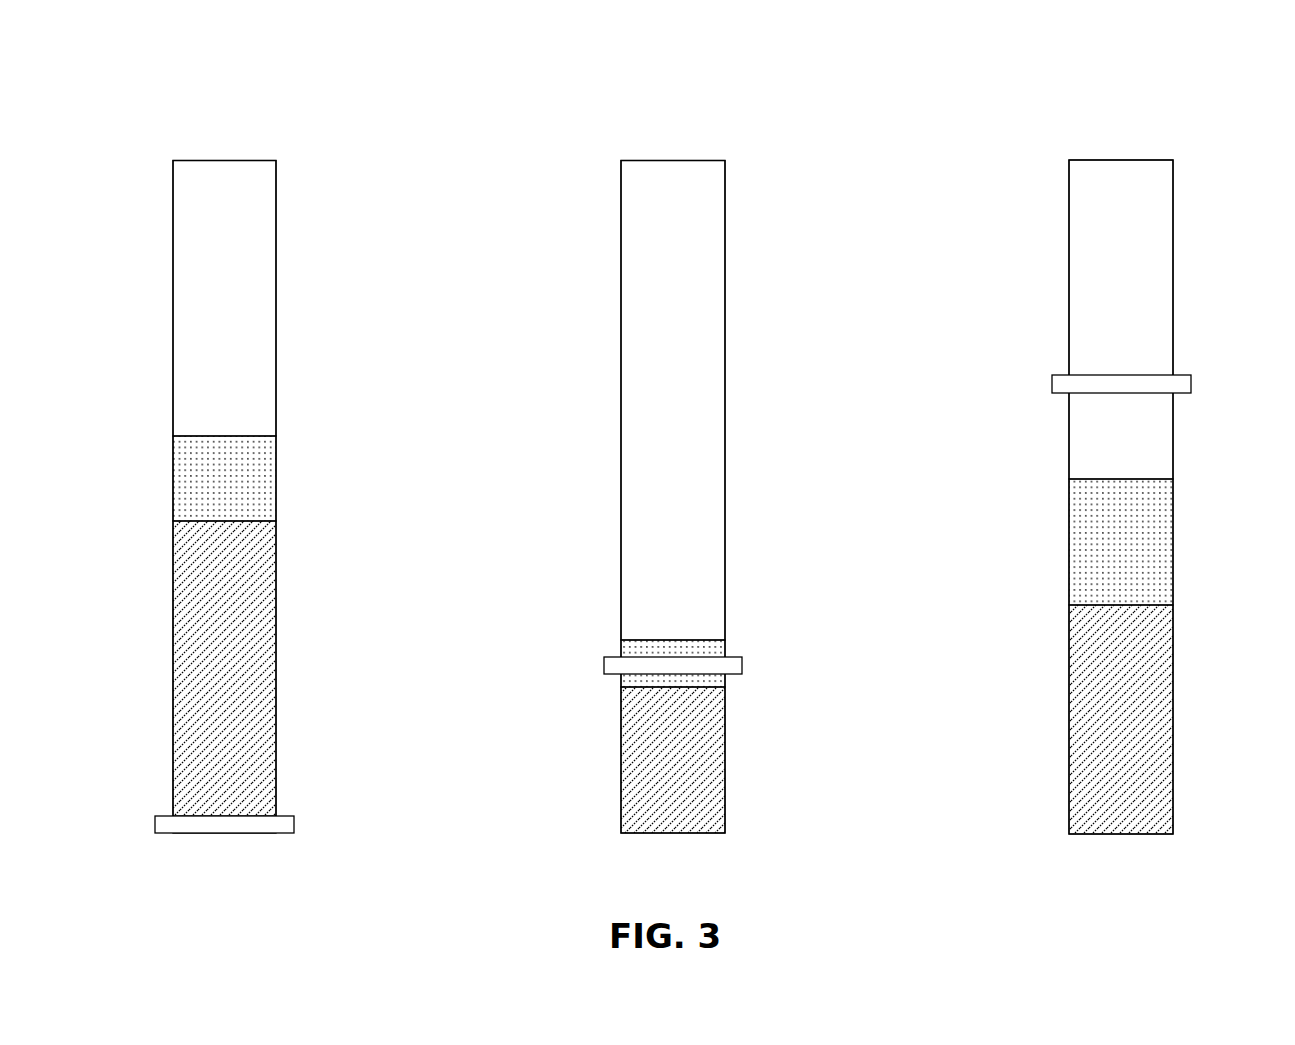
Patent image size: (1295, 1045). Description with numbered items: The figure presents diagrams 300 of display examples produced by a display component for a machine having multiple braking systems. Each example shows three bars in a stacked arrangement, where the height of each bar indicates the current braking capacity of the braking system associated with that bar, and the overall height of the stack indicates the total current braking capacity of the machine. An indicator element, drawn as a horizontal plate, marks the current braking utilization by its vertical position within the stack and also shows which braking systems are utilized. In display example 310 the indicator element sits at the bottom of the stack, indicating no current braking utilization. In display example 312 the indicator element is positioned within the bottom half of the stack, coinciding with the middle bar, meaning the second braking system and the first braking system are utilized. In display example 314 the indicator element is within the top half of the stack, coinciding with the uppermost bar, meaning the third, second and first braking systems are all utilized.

The diagrams 300 is at (160, 46).
The display example 310 is at (240, 128).
The display example 312 is at (688, 127).
The display example 314 is at (1136, 127).